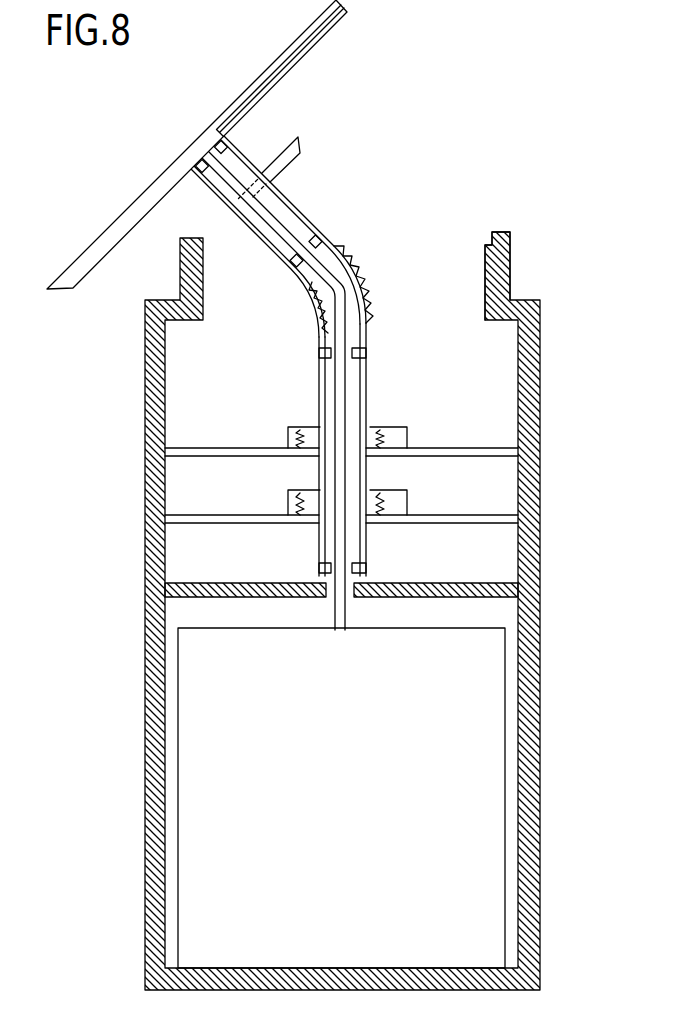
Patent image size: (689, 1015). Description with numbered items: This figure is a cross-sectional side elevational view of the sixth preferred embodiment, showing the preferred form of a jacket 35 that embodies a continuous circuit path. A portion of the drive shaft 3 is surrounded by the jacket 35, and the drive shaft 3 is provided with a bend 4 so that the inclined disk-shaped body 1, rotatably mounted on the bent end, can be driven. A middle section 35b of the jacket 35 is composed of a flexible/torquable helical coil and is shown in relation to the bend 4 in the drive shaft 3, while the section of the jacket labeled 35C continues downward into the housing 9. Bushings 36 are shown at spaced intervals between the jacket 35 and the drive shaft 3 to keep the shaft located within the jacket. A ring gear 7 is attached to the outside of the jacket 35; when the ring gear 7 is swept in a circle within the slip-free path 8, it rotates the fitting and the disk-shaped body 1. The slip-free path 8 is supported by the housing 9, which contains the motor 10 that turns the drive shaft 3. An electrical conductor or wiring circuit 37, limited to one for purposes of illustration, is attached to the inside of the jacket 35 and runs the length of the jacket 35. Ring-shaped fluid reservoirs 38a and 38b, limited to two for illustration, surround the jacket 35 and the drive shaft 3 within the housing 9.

The disk-shaped body 1 is at (193, 136).
The drive shaft 3 is at (290, 227).
The bend 4 is at (317, 297).
The ring gear 7 is at (307, 140).
The slip-free path 8 is at (490, 238).
The housing 9 is at (540, 541).
The motor 10 is at (490, 716).
The jacket 35 is at (290, 186).
The middle section of the jacket 35b is at (372, 272).
The vertical casing section 35C is at (367, 368).
The bushings 36 is at (292, 262).
The electrical conductor or wiring circuit 37 is at (292, 494).
The ring-shaped fluid reservoir 38a is at (407, 437).
The ring-shaped fluid reservoir 38b is at (407, 498).